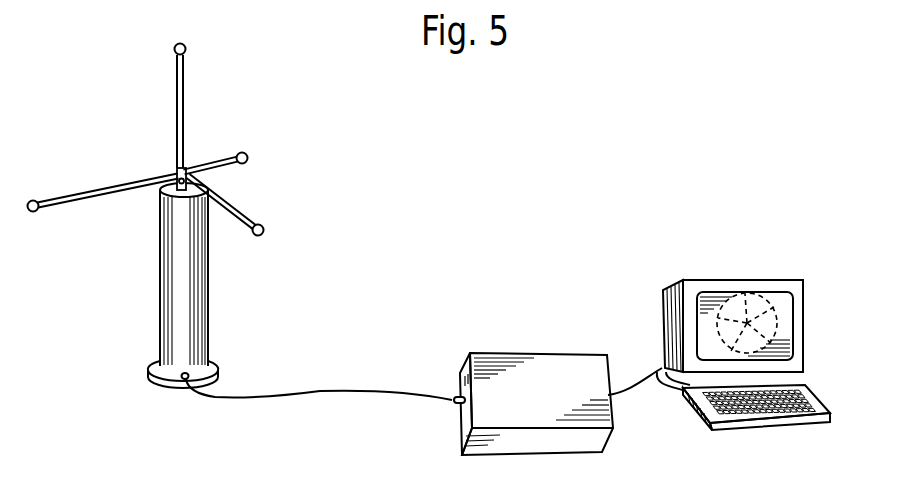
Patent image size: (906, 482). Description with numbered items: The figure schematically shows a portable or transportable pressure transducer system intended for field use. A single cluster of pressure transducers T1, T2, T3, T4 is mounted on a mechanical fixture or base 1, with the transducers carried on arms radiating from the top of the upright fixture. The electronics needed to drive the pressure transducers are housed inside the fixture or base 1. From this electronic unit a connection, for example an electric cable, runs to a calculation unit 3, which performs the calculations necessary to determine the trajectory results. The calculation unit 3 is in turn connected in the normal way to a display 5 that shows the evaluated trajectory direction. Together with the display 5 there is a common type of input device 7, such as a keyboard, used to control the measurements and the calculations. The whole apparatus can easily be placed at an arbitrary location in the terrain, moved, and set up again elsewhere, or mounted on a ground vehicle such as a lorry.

The mechanical fixture or base 1 is at (173, 299).
The calculation unit 3 is at (480, 368).
The display 5 is at (800, 341).
The input device 7 is at (829, 408).
The pressure transducer T1 is at (201, 96).
The pressure transducer T2 is at (232, 177).
The pressure transducer T3 is at (242, 221).
The pressure transducer T4 is at (103, 216).